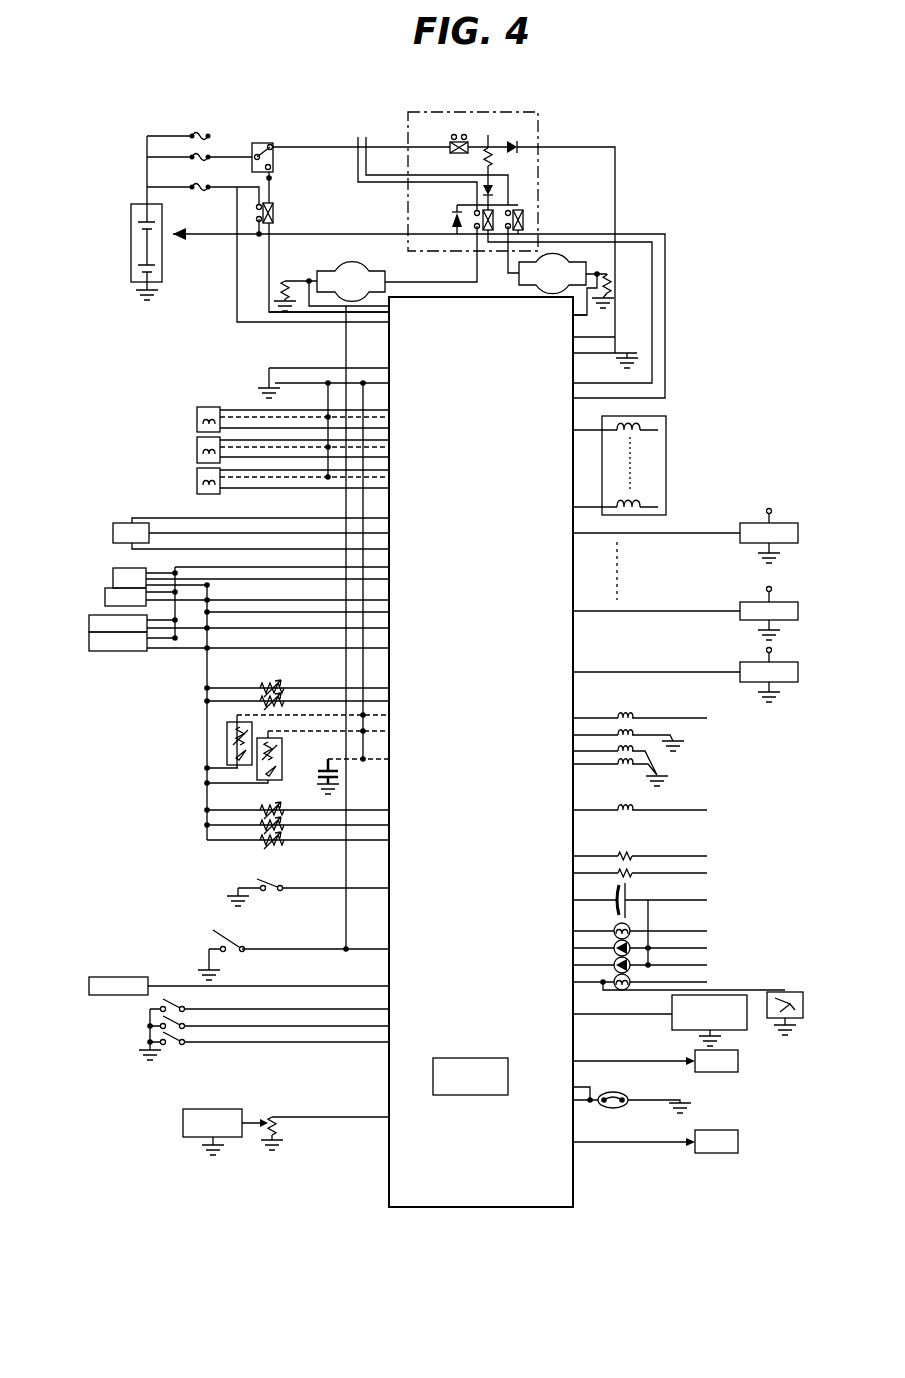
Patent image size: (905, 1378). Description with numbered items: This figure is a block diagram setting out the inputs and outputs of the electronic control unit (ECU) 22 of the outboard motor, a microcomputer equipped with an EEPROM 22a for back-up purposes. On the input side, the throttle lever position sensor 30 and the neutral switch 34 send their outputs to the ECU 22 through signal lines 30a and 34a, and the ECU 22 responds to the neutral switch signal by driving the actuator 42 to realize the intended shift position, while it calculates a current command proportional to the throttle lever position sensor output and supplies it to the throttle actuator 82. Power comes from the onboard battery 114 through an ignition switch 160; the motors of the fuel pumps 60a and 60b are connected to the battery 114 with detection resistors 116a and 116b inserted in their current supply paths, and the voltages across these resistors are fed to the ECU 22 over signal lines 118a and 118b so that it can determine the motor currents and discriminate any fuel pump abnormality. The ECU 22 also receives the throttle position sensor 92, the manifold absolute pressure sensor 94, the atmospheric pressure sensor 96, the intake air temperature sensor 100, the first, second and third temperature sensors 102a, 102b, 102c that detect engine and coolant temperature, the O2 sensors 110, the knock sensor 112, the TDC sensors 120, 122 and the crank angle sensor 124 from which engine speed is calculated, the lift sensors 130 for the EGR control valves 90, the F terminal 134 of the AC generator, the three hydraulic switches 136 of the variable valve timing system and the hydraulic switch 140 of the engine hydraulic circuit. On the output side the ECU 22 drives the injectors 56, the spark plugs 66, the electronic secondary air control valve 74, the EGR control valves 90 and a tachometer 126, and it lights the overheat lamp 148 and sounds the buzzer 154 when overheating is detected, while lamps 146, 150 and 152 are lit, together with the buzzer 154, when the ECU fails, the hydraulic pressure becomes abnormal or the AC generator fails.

The electronic control unit 22 is at (515, 703).
The EEPROM 22a is at (473, 1058).
The throttle lever position sensor 30 is at (240, 1109).
The signal line 30a is at (315, 1117).
The neutral switch 34 is at (221, 943).
The signal line 34a is at (286, 949).
The actuator 42 is at (728, 1070).
The injector 56 is at (660, 416).
The fuel pump 60a is at (366, 268).
The fuel pump 60b is at (552, 256).
The spark plug 66 is at (752, 602).
The electronic secondary air control valve 74 is at (745, 662).
The actuator 82 is at (728, 1150).
The EGR control valve 90 is at (620, 770).
The throttle position sensor 92 is at (105, 597).
The manifold absolute pressure sensor 94 is at (113, 535).
The atmospheric air pressure sensor 96 is at (113, 576).
The intake air temperature sensor 100 is at (258, 703).
The first temperature sensor 102a is at (258, 809).
The second temperature sensor 102b is at (258, 824).
The third temperature sensor 102c is at (285, 842).
The O2 sensor 110 is at (227, 754).
The knock sensor 112 is at (320, 774).
The onboard battery 114 is at (131, 251).
The detection resistor 116a is at (285, 280).
The detection resistor 116b is at (613, 277).
The signal line 118a is at (362, 308).
The signal line 118b is at (578, 318).
The TDC sensor 120 is at (196, 418).
The TDC sensor 122 is at (196, 448).
The crank angle sensor 124 is at (196, 479).
The tachometer 126 is at (672, 1003).
The lift sensor 130 is at (89, 647).
The F terminal 134 is at (128, 977).
The hydraulic switch 136 is at (187, 1033).
The hydraulic switch 140 is at (256, 879).
The lamp 146 is at (615, 929).
The overheat lamp 148 is at (632, 945).
The lamp 150 is at (632, 962).
The lamp 152 is at (632, 978).
The buzzer 154 is at (628, 890).
The ignition switch 160 is at (259, 140).